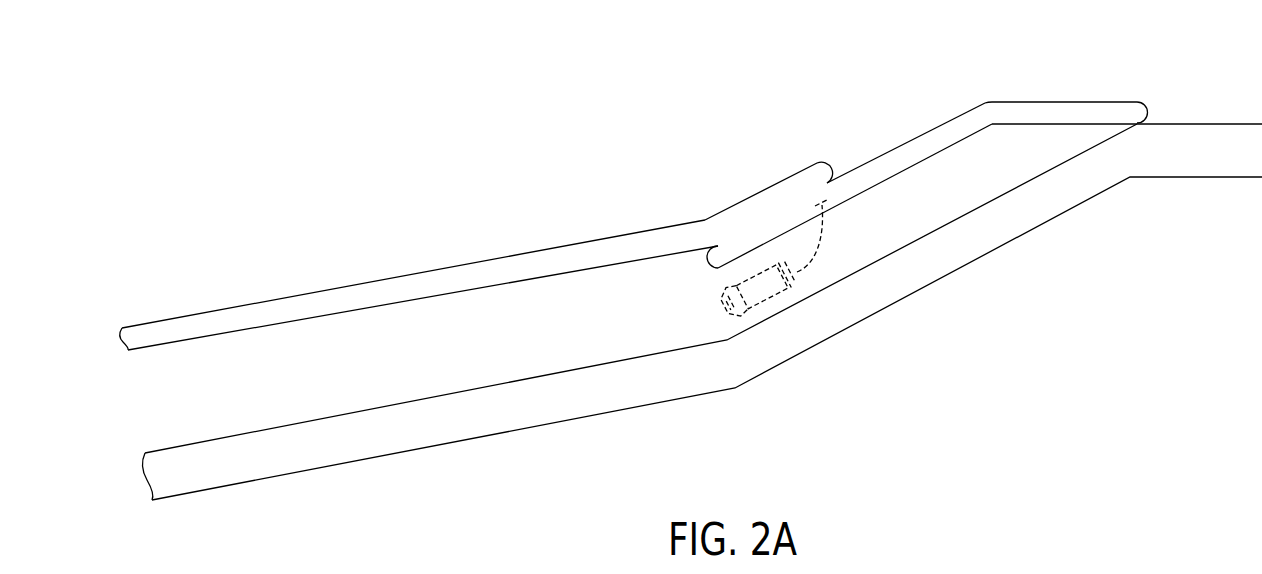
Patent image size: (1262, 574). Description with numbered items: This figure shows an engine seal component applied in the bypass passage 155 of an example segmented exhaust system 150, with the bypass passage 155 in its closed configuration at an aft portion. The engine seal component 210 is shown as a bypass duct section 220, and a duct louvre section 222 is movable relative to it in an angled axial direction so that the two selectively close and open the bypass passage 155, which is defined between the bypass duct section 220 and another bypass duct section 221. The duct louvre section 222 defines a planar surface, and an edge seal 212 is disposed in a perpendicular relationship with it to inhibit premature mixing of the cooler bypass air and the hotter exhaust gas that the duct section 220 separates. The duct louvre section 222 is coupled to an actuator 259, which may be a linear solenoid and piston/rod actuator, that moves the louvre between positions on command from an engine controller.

The segmented exhaust system 150 is at (438, 104).
The bypass passage 155 is at (150, 396).
The engine seal component 210 is at (289, 310).
The bypass duct section 220 is at (788, 195).
The edge seal 212 is at (831, 182).
The duct louvre section 222 is at (982, 120).
The bypass duct section 221 is at (690, 383).
The actuator 259 is at (760, 312).